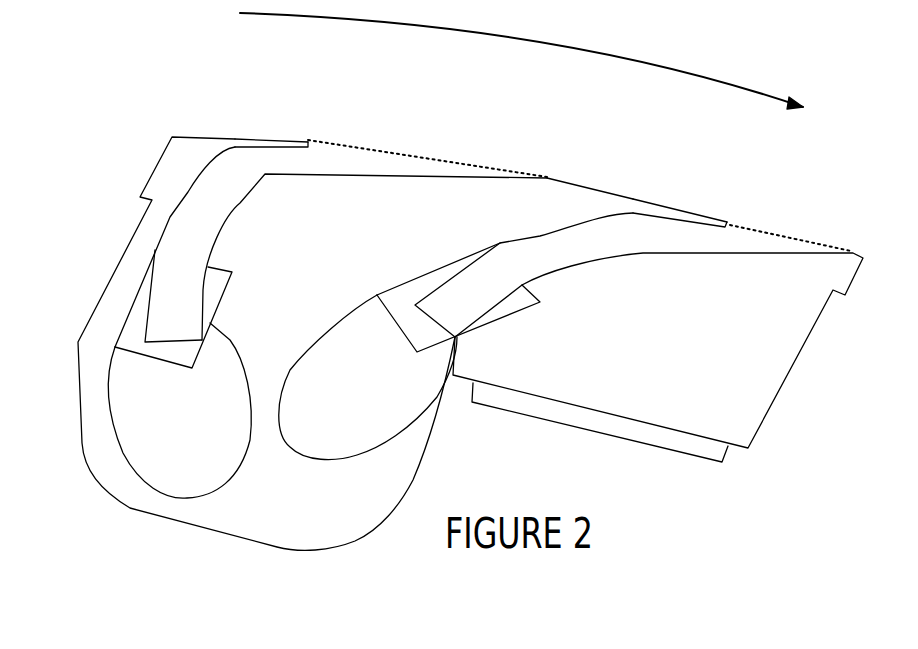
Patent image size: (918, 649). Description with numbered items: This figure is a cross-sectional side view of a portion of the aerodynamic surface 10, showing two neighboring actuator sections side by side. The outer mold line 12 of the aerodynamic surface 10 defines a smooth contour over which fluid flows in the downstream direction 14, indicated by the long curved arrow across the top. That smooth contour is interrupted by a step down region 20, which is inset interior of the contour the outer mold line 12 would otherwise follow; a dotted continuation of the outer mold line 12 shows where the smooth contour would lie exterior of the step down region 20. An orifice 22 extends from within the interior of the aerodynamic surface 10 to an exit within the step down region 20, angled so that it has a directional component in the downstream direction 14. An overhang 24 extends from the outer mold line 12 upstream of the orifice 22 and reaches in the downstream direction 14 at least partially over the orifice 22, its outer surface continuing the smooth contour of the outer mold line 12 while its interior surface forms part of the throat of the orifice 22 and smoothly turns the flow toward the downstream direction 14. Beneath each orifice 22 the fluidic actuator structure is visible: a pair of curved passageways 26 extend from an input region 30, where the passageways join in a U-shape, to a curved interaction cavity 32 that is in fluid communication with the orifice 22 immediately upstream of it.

The aerodynamic surface 10 is at (398, 127).
The outer mold line 12 is at (183, 134).
The downstream direction 14 is at (540, 42).
The step down region 20 is at (372, 178).
The orifice 22 is at (277, 160).
The overhang 24 is at (257, 142).
The curved passageways 26 is at (177, 235).
The input region 30 is at (123, 393).
The interaction cavity 32 is at (213, 172).